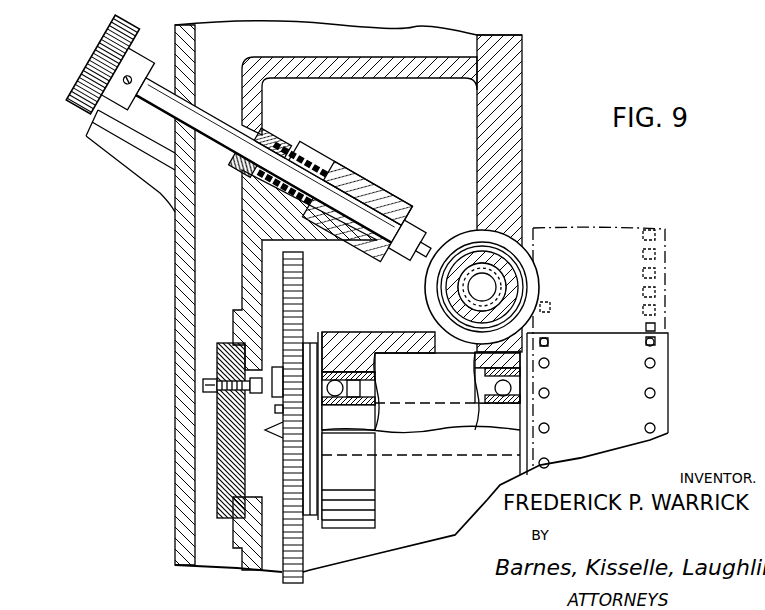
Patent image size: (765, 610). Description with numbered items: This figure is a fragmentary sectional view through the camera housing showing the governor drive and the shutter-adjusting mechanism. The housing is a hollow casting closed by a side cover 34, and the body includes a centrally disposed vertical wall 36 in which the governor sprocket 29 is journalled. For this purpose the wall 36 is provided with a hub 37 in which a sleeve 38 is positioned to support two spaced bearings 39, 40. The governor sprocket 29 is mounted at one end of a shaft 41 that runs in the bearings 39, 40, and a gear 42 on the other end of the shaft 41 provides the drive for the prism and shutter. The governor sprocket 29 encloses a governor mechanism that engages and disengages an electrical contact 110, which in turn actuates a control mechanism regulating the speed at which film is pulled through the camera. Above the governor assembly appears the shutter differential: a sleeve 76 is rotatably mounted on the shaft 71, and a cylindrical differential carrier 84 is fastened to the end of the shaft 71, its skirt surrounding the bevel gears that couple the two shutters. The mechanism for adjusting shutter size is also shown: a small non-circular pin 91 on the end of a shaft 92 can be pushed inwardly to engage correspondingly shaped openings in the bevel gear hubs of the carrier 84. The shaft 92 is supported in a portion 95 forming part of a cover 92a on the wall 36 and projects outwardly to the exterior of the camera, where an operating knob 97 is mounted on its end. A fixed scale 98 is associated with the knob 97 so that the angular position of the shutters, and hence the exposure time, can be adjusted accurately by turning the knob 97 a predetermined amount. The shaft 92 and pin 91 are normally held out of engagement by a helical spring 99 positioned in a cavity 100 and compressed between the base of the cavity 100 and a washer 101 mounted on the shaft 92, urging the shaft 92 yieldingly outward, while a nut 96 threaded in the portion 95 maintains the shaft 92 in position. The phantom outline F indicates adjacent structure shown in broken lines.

The governor sprocket 29 is at (668, 376).
The side cover 34 is at (185, 478).
The vertical wall 36 is at (517, 138).
The hub 37 is at (400, 333).
The sleeve 38 is at (421, 404).
The bearing 39 is at (343, 393).
The bearing 40 is at (500, 407).
The shaft 41 is at (348, 466).
The gear 42 is at (300, 300).
The shaft 71 is at (482, 287).
The sleeve 76 is at (497, 282).
The cylindrical differential carrier 84 is at (512, 248).
The non-circular pin 91 is at (421, 258).
The shaft 92 is at (195, 101).
The cover 92a is at (302, 58).
The portion 95 is at (357, 188).
The nut 96 is at (275, 140).
The operating knob 97 is at (107, 43).
The fixed scale 98 is at (128, 160).
The helical spring 99 is at (308, 157).
The cavity 100 is at (318, 165).
The washer 101 is at (223, 169).
The electrical contact 110 is at (243, 402).
The frame (phantom) F is at (668, 253).